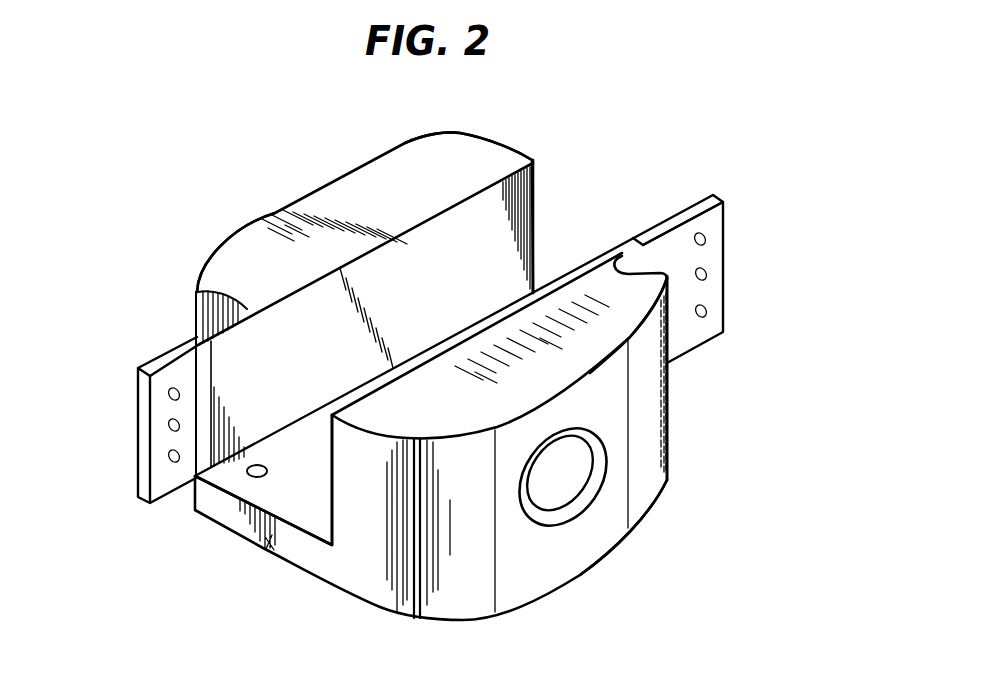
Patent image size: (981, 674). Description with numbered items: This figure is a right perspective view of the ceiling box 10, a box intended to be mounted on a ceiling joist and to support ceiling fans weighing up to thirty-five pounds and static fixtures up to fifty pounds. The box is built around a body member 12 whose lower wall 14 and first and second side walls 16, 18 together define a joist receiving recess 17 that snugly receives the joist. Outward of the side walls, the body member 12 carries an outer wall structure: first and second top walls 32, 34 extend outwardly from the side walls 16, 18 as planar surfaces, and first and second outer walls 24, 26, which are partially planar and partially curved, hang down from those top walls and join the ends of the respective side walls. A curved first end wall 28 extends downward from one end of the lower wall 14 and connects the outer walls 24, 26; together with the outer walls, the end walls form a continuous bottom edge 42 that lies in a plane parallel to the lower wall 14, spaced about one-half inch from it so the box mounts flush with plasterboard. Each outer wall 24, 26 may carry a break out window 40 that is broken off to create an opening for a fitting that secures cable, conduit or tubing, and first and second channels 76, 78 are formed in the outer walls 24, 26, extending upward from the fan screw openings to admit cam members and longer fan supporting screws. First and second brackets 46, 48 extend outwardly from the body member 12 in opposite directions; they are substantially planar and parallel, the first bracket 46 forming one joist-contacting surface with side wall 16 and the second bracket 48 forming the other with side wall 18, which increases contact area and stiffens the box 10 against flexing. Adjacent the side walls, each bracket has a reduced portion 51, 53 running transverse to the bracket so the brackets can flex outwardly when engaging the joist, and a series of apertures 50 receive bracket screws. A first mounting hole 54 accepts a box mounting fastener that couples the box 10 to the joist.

The ceiling box 10 is at (266, 190).
The body member 12 is at (516, 145).
The lower wall 14 is at (274, 546).
The first side wall 16 is at (527, 197).
The joist receiving recess 17 is at (569, 229).
The second side wall 18 is at (324, 512).
The first outer wall 24 is at (228, 236).
The second outer wall 26 is at (653, 424).
The first end wall 28 is at (292, 506).
The first top wall 32 is at (433, 148).
The second top wall 34 is at (634, 300).
The break out window 40 is at (580, 513).
The bottom edge 42 is at (645, 533).
The first bracket 46 is at (128, 383).
The second bracket 48 is at (730, 226).
The apertures 50 is at (166, 455).
The reduced portion 51 is at (214, 356).
The reduced portion 53 is at (664, 226).
The first mounting hole 54 is at (268, 467).
The first channel 76 is at (216, 299).
The second channel 78 is at (640, 266).